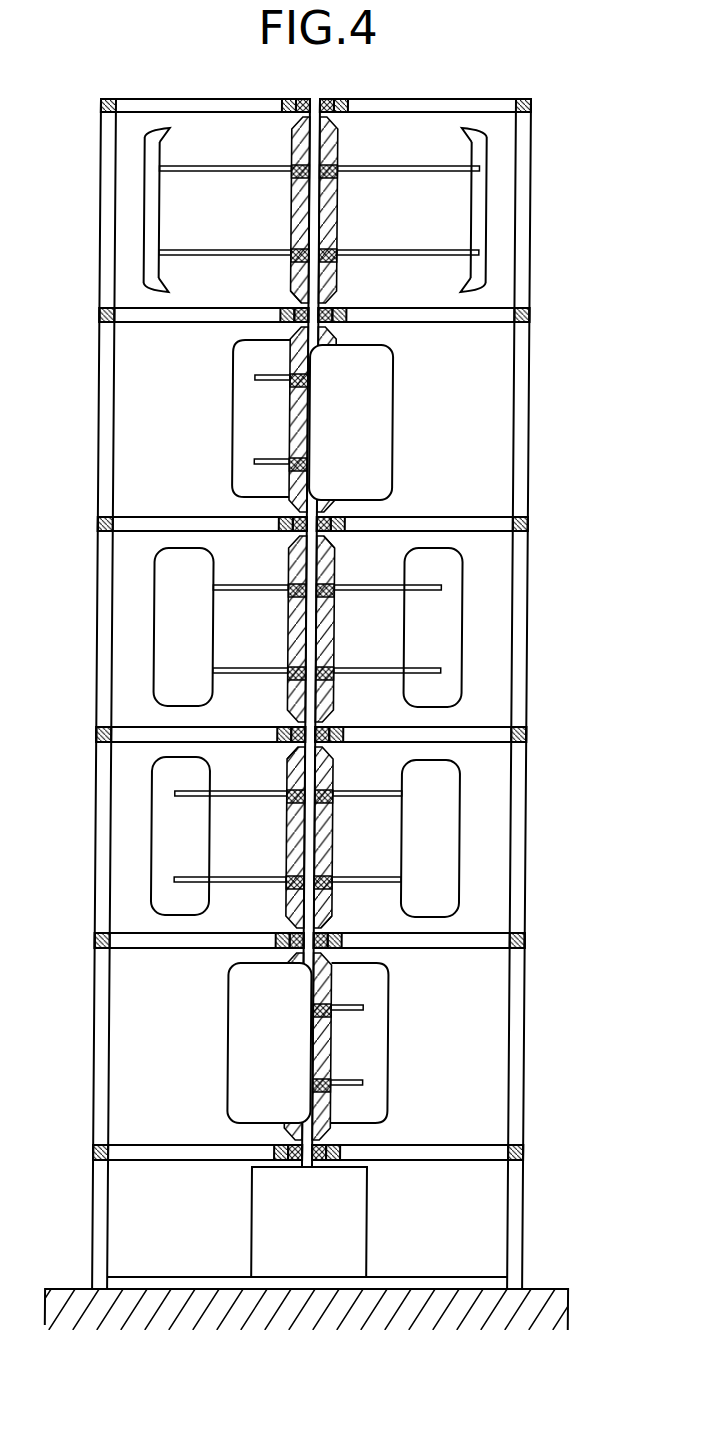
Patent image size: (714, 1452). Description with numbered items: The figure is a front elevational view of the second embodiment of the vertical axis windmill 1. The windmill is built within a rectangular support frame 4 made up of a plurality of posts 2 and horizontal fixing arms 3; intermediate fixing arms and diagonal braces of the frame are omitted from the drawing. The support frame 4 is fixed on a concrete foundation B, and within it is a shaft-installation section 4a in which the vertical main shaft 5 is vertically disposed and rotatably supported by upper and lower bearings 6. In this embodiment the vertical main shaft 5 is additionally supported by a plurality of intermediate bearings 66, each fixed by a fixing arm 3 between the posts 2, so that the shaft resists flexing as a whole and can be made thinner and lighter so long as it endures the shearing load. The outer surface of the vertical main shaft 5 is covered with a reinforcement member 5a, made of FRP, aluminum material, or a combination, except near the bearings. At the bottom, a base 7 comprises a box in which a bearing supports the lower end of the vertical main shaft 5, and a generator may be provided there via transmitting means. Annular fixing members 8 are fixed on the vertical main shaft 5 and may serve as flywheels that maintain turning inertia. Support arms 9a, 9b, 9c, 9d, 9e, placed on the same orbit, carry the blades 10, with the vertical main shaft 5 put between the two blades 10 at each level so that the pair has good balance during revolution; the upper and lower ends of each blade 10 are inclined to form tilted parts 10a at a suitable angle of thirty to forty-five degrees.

The vertical axis windmill 1 is at (556, 154).
The post 2 is at (101, 1035).
The fixing arm 3 is at (207, 99).
The support frame 4 is at (99, 847).
The shaft-installation section 4a is at (148, 1118).
The vertical main shaft 5 is at (314, 99).
The reinforcement member 5a is at (292, 215).
The bearing 6 is at (328, 99).
The intermediate bearing 66 is at (295, 305).
The base 7 is at (329, 1240).
The fixing member 8 is at (340, 172).
The support arm 9a is at (262, 168).
The support arm 9b is at (268, 380).
The support arm 9c is at (258, 590).
The support arm 9d is at (258, 796).
The support arm 9e is at (357, 1004).
The blade 10 is at (160, 212).
The tilted part 10a is at (465, 134).
The concrete foundation B is at (577, 1308).